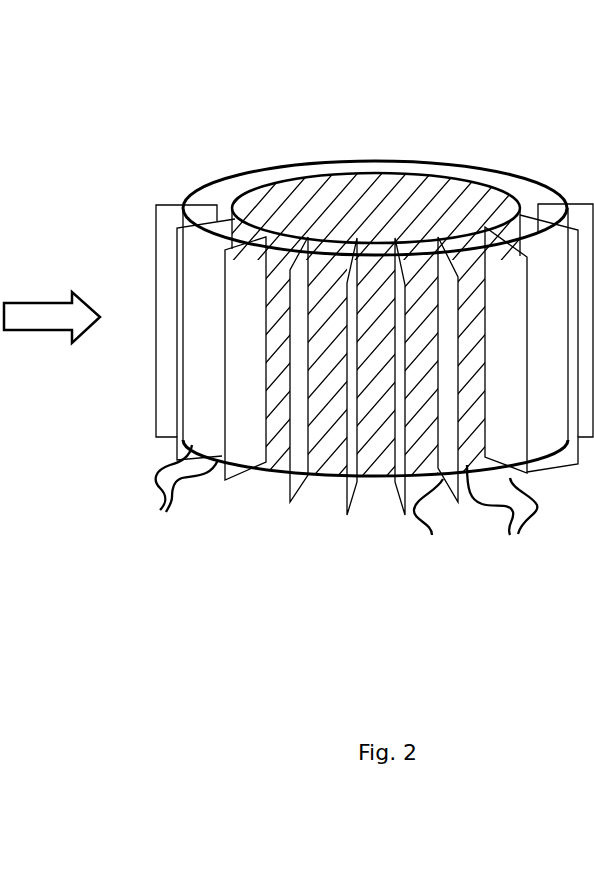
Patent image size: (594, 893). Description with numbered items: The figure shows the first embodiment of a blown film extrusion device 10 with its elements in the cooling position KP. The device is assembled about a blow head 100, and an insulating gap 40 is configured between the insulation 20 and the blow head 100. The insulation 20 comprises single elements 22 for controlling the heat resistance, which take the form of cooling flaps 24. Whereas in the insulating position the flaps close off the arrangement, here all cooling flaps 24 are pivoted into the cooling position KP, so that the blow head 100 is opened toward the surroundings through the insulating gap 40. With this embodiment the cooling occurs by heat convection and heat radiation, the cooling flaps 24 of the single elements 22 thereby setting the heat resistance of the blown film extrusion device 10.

The blown film extrusion device 10 is at (244, 150).
The insulation 20 is at (146, 266).
The single elements 22 is at (178, 491).
The cooling flaps 24 is at (550, 383).
The insulating gap 40 is at (522, 199).
The blow head 100 is at (367, 446).
The cooling position KP is at (235, 484).